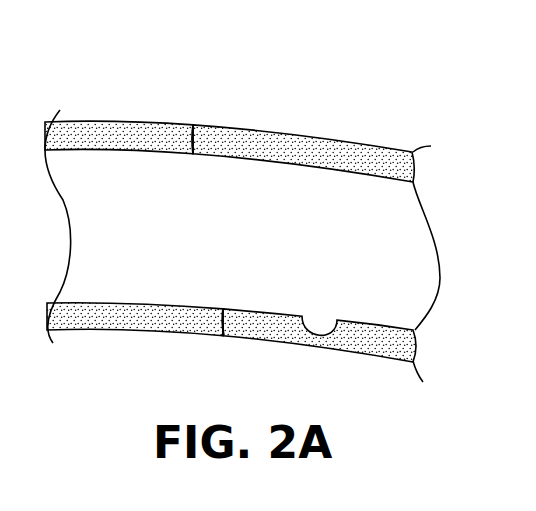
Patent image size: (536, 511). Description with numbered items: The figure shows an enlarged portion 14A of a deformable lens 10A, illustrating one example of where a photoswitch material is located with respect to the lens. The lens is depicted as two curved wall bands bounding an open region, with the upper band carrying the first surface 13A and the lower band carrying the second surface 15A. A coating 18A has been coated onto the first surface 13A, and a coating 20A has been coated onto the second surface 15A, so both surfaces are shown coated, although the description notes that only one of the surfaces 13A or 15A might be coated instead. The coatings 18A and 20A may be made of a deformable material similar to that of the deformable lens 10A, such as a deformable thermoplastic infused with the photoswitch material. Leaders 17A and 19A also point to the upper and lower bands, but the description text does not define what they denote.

The deformable lens 10A is at (252, 107).
The first surface 13A is at (195, 123).
The portion of the deformable lens 14A is at (333, 89).
The second surface 15A is at (337, 320).
The distal wall segment 17A is at (271, 130).
The coating 18A is at (137, 130).
The joint between lower wall segments 19A is at (227, 337).
The coating 20A is at (160, 315).